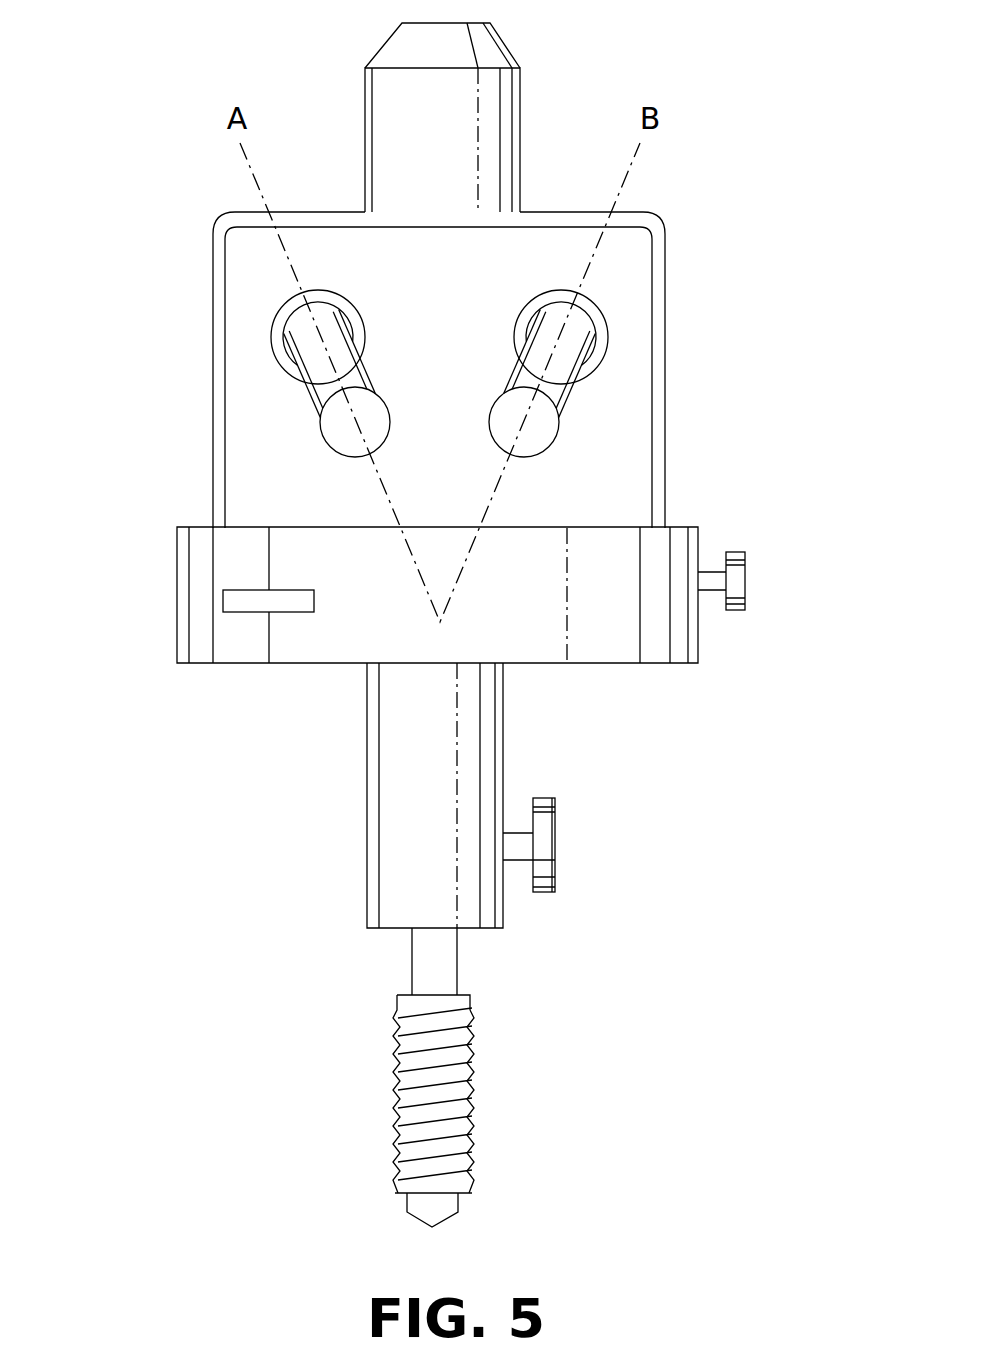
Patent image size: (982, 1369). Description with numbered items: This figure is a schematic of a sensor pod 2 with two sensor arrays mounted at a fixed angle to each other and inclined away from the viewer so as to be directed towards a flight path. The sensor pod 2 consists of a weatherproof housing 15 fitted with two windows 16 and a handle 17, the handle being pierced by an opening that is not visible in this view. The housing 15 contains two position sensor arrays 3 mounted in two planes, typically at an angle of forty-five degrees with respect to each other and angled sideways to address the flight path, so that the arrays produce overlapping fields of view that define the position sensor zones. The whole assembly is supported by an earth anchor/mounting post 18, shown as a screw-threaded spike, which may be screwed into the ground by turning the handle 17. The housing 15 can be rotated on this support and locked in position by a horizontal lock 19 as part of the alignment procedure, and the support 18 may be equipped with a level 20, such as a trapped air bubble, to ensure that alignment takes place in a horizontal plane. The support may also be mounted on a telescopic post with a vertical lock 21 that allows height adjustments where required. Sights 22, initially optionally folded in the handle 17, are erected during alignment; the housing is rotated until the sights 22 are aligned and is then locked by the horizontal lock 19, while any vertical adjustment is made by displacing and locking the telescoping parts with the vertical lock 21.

The sensor pod 2 is at (173, 222).
The position sensor arrays 3 is at (352, 418).
The weatherproof housing 15 is at (213, 355).
The windows 16 is at (292, 302).
The handle 17 is at (365, 78).
The earth anchor/mounting post 18 is at (458, 960).
The horizontal lock 19 is at (746, 562).
The level 20 is at (232, 600).
The vertical lock 21 is at (557, 812).
The sights 22 is at (510, 45).